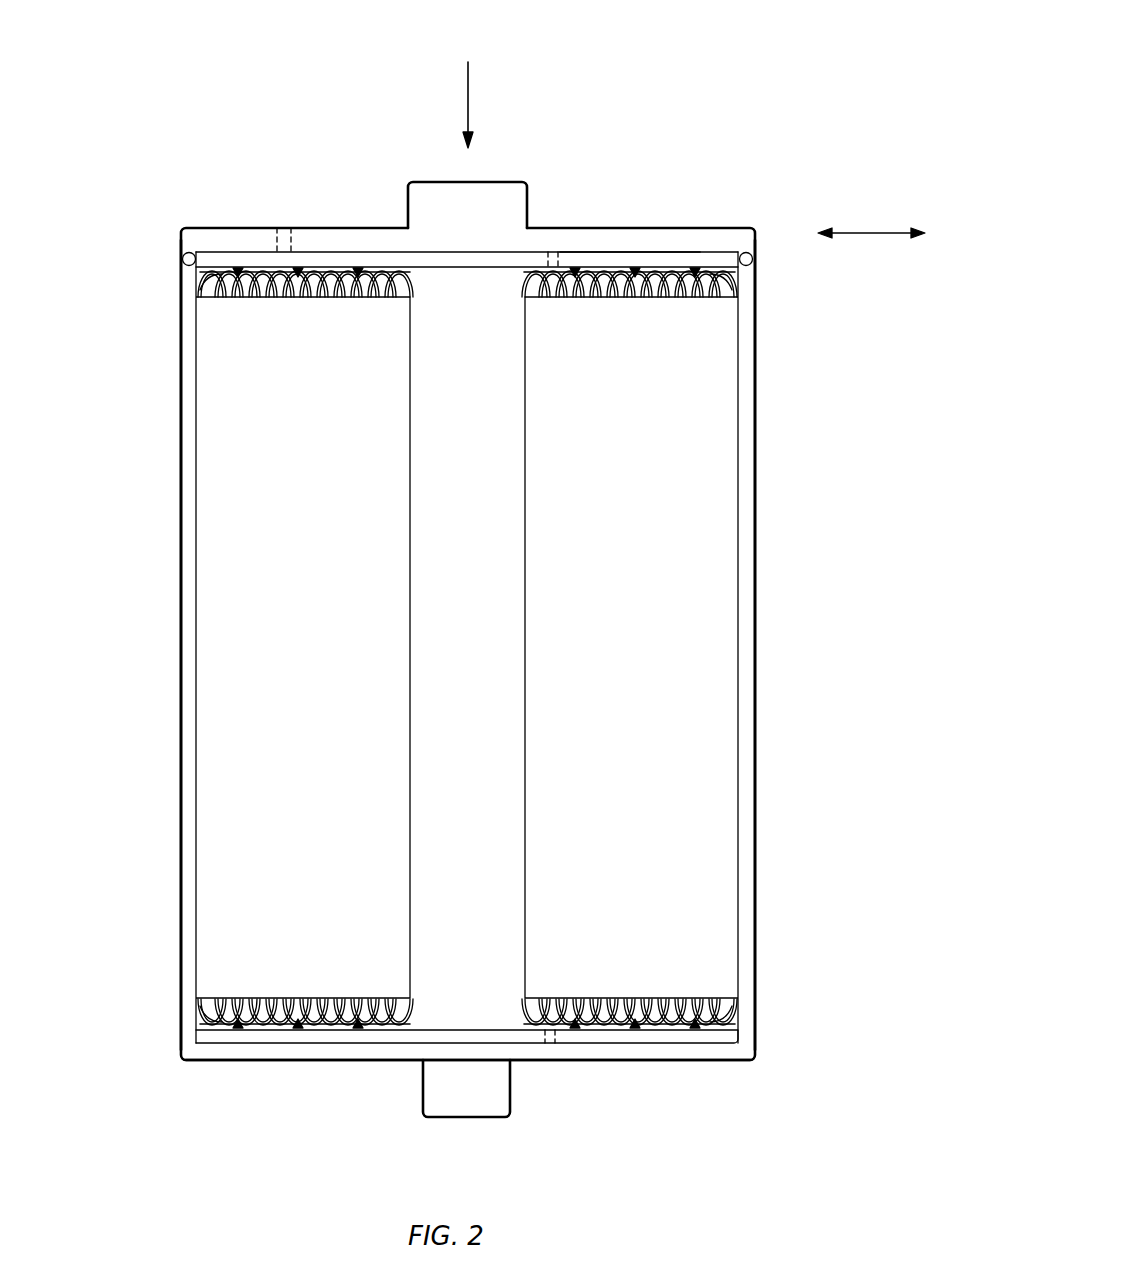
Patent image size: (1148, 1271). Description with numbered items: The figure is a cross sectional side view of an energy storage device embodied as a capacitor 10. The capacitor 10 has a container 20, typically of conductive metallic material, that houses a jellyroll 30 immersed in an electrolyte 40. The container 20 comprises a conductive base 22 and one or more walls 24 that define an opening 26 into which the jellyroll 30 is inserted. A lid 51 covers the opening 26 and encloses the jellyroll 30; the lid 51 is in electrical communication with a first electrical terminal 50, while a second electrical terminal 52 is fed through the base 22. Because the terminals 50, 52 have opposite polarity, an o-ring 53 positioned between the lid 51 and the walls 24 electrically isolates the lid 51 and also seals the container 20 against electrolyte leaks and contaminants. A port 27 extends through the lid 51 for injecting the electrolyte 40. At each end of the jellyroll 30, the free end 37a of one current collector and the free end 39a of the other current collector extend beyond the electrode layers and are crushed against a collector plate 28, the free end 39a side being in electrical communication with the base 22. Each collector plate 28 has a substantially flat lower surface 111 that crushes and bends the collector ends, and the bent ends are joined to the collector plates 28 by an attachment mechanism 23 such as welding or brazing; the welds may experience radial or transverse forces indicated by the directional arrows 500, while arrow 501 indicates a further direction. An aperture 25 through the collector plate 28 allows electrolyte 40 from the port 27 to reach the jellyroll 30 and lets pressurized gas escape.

The capacitor 10 is at (787, 97).
The container 20 is at (752, 367).
The conductive base 22 is at (643, 1060).
The attachment mechanism 23 is at (635, 268).
The walls 24 is at (180, 698).
The aperture 25 is at (552, 252).
The opening 26 is at (228, 268).
The port 27 is at (289, 228).
The collector plate 28 is at (660, 253).
The jellyroll 30 is at (213, 472).
The free end of current collector 37a is at (733, 283).
The free end of current collector 39a is at (742, 1015).
The electrolyte 40 is at (688, 450).
The first electrical terminal 50 is at (500, 186).
The lid 51 is at (576, 252).
The second electrical terminal 52 is at (500, 1105).
The o-ring 53 is at (183, 257).
The lower surface 111 is at (463, 272).
The directional arrows 500 is at (875, 232).
The pressing direction 501 is at (468, 88).